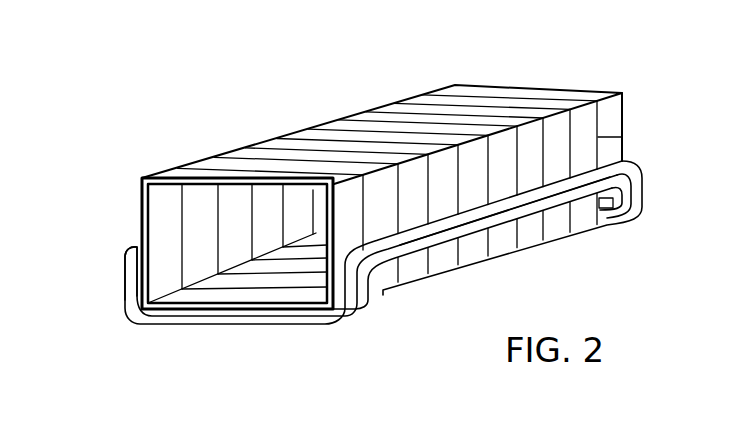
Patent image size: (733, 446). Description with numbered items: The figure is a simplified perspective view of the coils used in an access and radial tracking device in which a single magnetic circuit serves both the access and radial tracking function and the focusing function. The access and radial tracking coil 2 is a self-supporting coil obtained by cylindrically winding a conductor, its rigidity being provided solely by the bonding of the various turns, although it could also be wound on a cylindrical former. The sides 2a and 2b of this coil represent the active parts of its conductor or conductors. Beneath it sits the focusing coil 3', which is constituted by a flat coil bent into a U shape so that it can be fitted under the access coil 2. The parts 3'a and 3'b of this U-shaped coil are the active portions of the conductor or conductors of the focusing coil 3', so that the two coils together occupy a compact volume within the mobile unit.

The access and radial tracking coil 2 is at (548, 97).
The side of the coil 2a is at (623, 137).
The side of the coil 2b is at (140, 207).
The focusing coil 3' is at (419, 240).
The active portion of the focusing coil 3'a is at (505, 230).
The active portion of the focusing coil 3'b is at (90, 273).